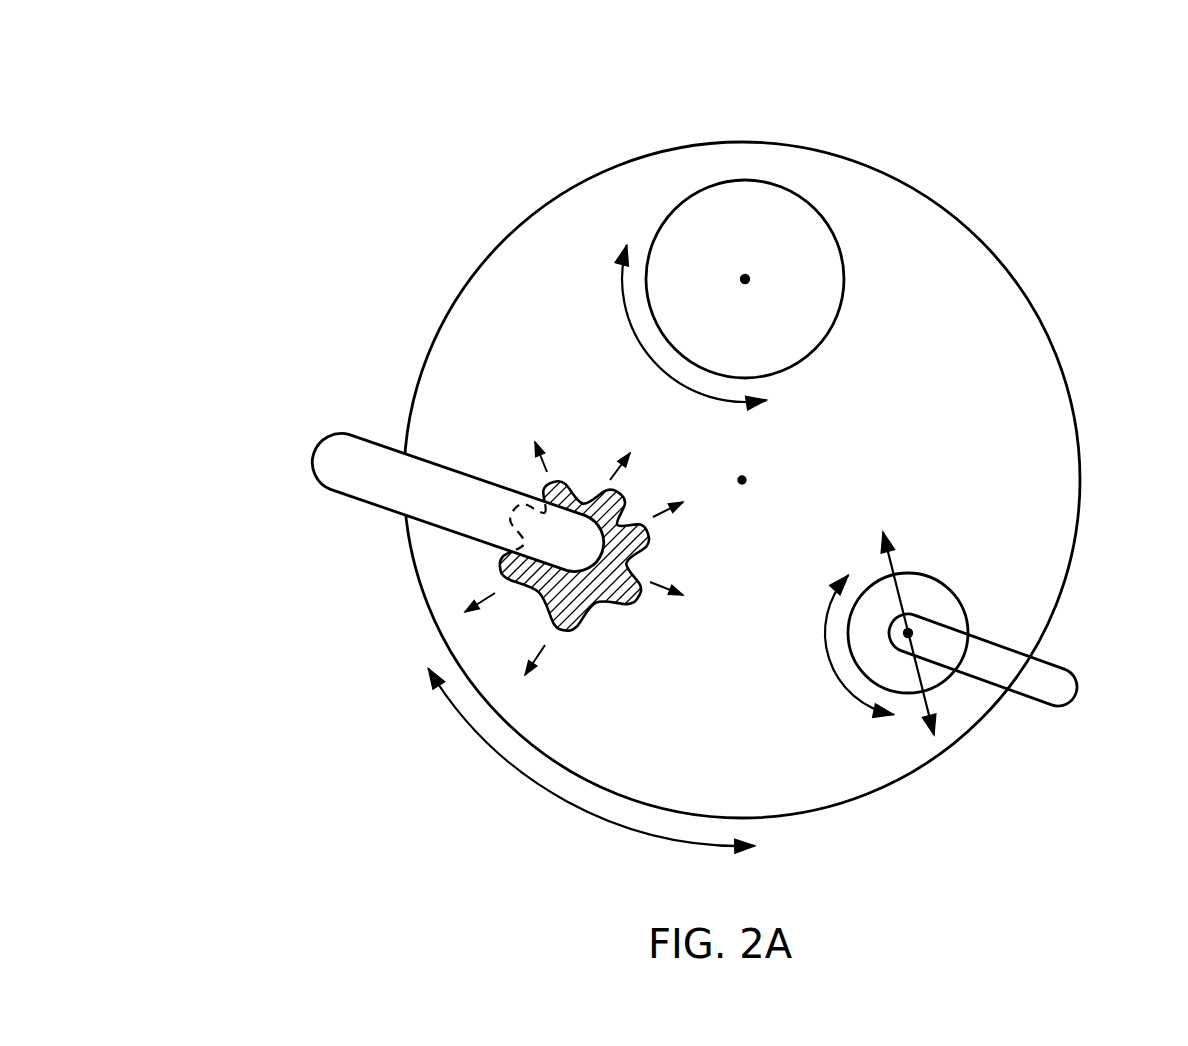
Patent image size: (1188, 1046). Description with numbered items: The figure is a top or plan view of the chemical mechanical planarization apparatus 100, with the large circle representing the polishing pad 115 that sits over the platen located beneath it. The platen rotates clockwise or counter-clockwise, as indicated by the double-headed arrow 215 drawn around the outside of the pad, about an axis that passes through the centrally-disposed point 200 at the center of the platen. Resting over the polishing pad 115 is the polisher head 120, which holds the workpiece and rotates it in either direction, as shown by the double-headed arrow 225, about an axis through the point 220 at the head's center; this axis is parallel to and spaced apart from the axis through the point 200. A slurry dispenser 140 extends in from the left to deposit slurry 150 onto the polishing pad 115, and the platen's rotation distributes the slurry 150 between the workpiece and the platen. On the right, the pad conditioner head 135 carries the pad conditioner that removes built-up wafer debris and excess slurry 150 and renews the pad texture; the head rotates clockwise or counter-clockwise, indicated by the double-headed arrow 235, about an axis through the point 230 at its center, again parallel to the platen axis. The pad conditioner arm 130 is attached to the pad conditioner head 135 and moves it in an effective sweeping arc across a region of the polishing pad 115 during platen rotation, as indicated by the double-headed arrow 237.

The chemical mechanical planarization apparatus 100 is at (333, 86).
The polishing pad 115 is at (1066, 470).
The polisher head 120 is at (690, 242).
The pad conditioner arm 130 is at (1058, 678).
The pad conditioner head 135 is at (938, 593).
The slurry dispenser 140 is at (335, 448).
The slurry 150 is at (586, 608).
The centrally-disposed point 200 is at (748, 477).
The double-headed arrow 215 is at (567, 803).
The point 220 is at (745, 274).
The double-headed arrow 225 is at (655, 362).
The point 230 is at (913, 633).
The double-headed arrow 235 is at (828, 660).
The double-headed arrow 237 is at (927, 697).